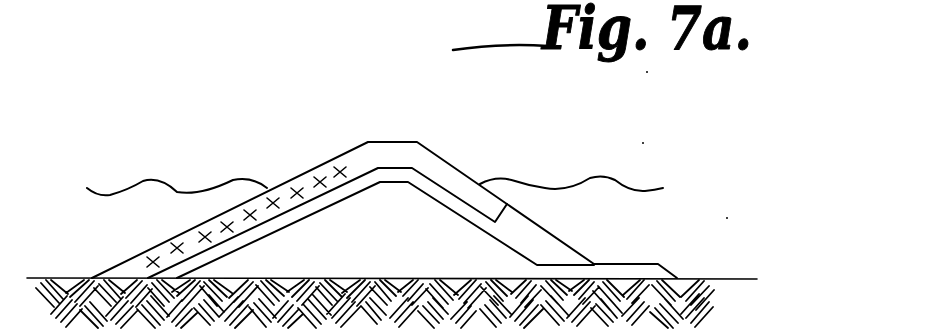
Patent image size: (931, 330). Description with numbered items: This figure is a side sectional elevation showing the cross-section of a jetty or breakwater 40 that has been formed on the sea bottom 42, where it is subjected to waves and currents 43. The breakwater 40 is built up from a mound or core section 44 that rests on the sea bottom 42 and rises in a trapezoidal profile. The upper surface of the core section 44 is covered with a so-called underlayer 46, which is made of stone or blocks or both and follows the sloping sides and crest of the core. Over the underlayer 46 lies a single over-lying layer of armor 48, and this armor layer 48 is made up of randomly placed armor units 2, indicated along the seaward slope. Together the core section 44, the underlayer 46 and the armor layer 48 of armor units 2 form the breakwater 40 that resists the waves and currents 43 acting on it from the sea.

The armor units 2 is at (325, 158).
The jetty or breakwater 40 is at (491, 159).
The sea bottom 42 is at (77, 260).
The waves and currents 43 is at (308, 172).
The mound or core section 44 is at (482, 262).
The underlayer 46 is at (255, 235).
The layer of armor 48 is at (200, 228).